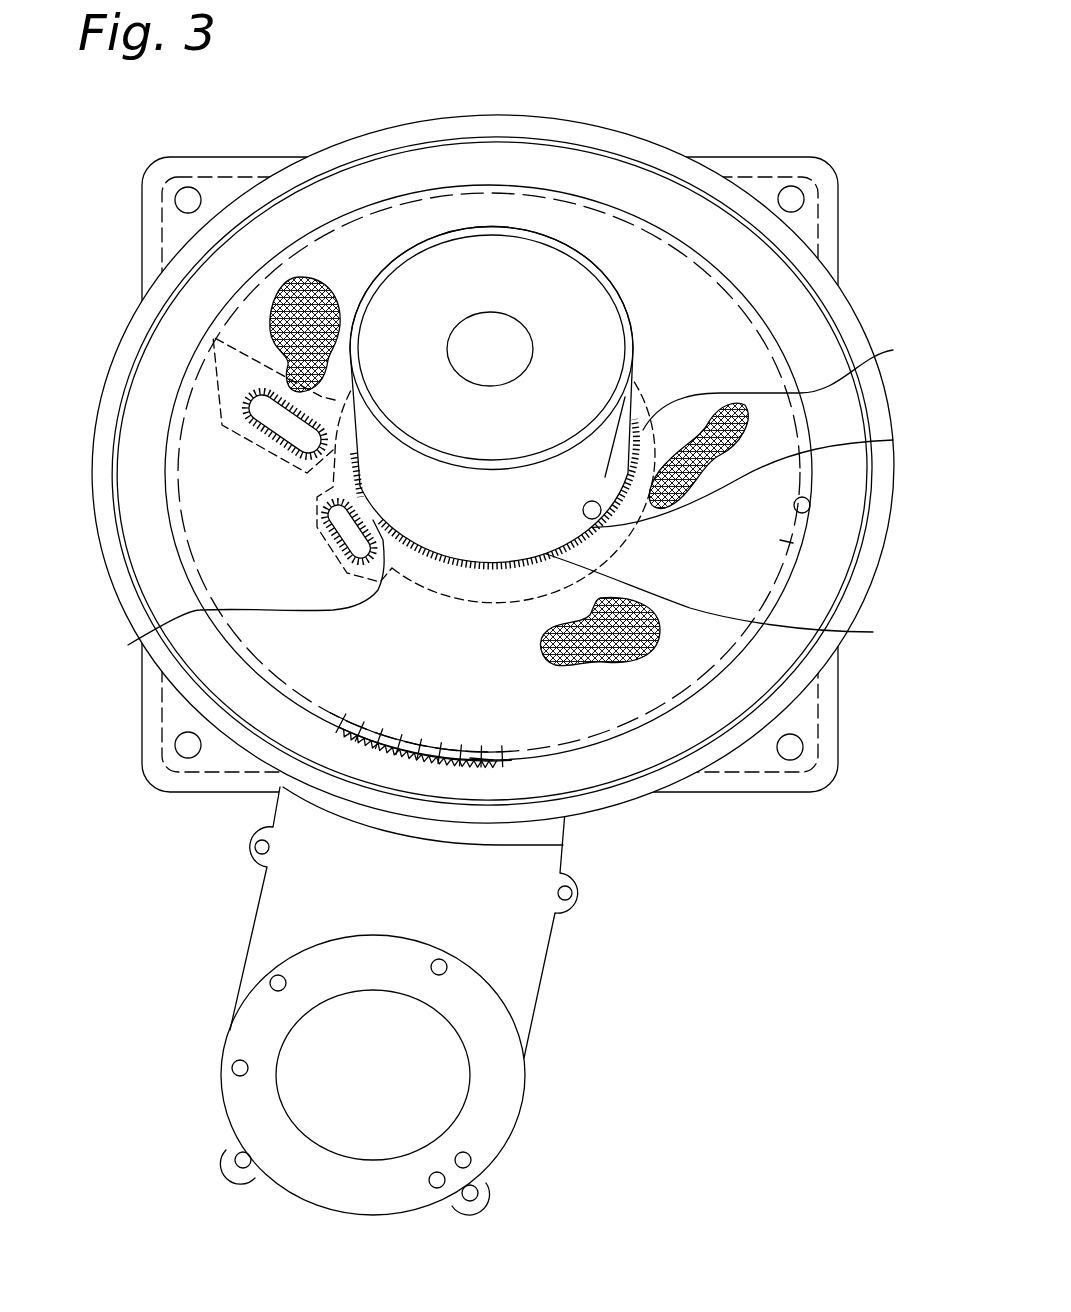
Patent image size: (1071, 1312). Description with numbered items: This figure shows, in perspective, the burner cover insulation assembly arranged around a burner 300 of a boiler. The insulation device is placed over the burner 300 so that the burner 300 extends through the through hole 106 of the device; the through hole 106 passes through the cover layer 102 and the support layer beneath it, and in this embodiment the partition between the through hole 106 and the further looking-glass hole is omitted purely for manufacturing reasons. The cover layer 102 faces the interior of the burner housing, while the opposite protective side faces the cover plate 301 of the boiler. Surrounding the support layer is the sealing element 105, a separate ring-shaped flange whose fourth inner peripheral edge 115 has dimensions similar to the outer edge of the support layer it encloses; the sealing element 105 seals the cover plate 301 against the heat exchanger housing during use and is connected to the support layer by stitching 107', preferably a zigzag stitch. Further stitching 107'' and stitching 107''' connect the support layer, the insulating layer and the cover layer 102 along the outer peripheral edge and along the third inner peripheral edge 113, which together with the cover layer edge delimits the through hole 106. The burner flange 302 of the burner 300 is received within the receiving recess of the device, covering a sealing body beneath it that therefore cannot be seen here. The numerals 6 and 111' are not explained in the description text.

The cover layer 102 is at (352, 240).
The sealing element 105 is at (603, 186).
The cover plate 301 is at (833, 313).
The stitching 107''' is at (800, 382).
The through hole 106 is at (766, 473).
The fourth inner peripheral edge 115 is at (810, 513).
The stitching 107'' is at (863, 561).
The hose 6 is at (717, 598).
The burner 300 is at (400, 477).
The burner flange 302 is at (234, 589).
The stitching 107' is at (559, 814).
The toothed belt 111' is at (526, 788).
The third inner peripheral edge 113 is at (551, 796).